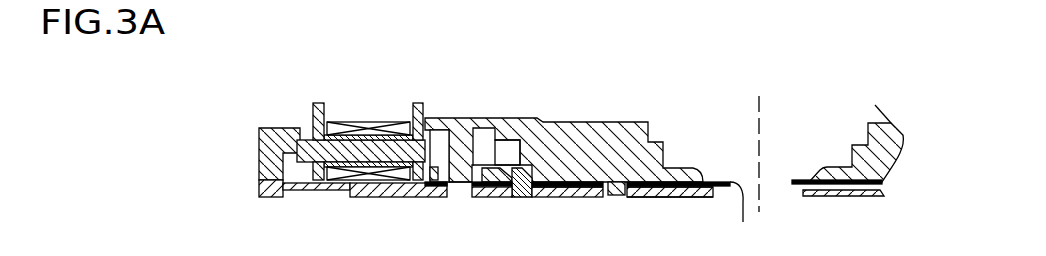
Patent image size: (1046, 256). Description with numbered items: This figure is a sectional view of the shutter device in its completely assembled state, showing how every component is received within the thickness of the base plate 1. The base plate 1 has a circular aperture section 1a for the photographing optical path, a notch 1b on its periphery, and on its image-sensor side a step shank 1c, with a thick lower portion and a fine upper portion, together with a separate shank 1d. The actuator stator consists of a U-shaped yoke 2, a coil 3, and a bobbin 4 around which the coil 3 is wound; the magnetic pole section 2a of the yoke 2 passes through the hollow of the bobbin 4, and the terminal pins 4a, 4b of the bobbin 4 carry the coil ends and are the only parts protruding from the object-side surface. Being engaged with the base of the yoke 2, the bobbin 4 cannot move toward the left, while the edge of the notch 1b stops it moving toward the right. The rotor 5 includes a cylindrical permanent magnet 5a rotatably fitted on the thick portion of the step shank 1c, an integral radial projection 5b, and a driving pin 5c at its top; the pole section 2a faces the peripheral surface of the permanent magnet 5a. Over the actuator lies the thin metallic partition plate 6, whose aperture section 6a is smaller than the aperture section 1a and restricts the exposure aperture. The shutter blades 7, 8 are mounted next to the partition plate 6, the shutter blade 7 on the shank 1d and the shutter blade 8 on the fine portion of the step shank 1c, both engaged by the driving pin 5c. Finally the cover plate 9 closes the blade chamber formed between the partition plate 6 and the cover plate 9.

The base plate 1 is at (573, 130).
The aperture section 1a is at (807, 176).
The notch 1b is at (307, 132).
The step shank 1c is at (450, 183).
The shank 1d is at (607, 196).
The yoke 2 is at (310, 163).
The magnetic pole section 2a is at (513, 148).
The coil 3 is at (368, 127).
The bobbin 4 is at (358, 152).
The terminal pin 4a is at (318, 103).
The terminal pin 4b is at (415, 103).
The rotor 5 is at (499, 152).
The permanent magnet 5a is at (440, 133).
The projection 5b is at (500, 185).
The driving pin 5c is at (518, 197).
The partition plate 6 is at (590, 152).
The aperture section 6a is at (741, 215).
The shutter blade 7 is at (643, 193).
The shutter blade 8 is at (678, 193).
The cover plate 9 is at (373, 191).